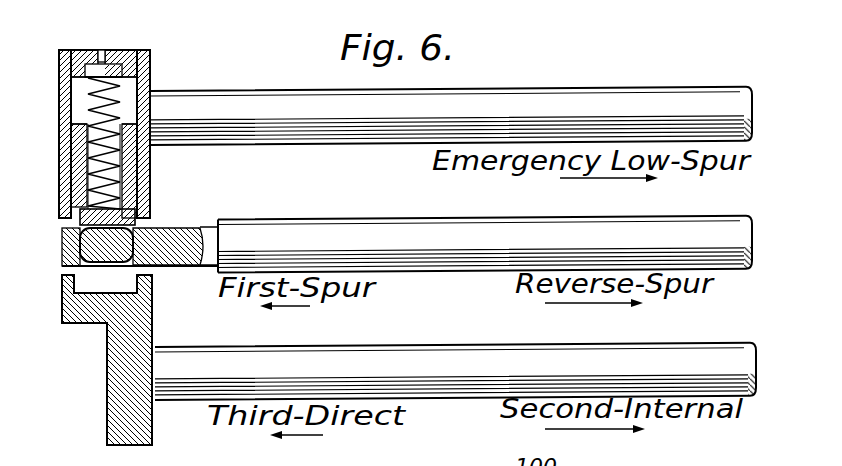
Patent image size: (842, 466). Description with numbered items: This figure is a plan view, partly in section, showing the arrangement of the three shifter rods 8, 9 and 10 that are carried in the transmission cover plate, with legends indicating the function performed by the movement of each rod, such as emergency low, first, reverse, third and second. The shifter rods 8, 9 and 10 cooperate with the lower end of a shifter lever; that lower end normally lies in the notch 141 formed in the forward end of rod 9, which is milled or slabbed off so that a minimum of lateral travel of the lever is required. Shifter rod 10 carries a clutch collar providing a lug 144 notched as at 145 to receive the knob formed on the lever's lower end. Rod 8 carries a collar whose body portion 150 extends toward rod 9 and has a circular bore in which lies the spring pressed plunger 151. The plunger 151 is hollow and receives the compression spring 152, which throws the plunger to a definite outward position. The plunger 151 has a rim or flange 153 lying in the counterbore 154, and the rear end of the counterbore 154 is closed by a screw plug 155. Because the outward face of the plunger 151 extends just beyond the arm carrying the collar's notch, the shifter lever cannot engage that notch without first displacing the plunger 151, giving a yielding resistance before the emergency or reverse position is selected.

The shifter rod 8 is at (247, 103).
The shifter rod 9 is at (273, 230).
The shifter rod 10 is at (263, 353).
The notch 141 is at (63, 237).
The lug 144 is at (118, 328).
The notch 145 is at (97, 280).
The body portion 150 is at (150, 74).
The spring pressed plunger 151 is at (80, 172).
The compression spring 152 is at (98, 62).
The rim or flange 153 is at (72, 128).
The counterbore 154 is at (80, 97).
The screw plug 155 is at (131, 35).